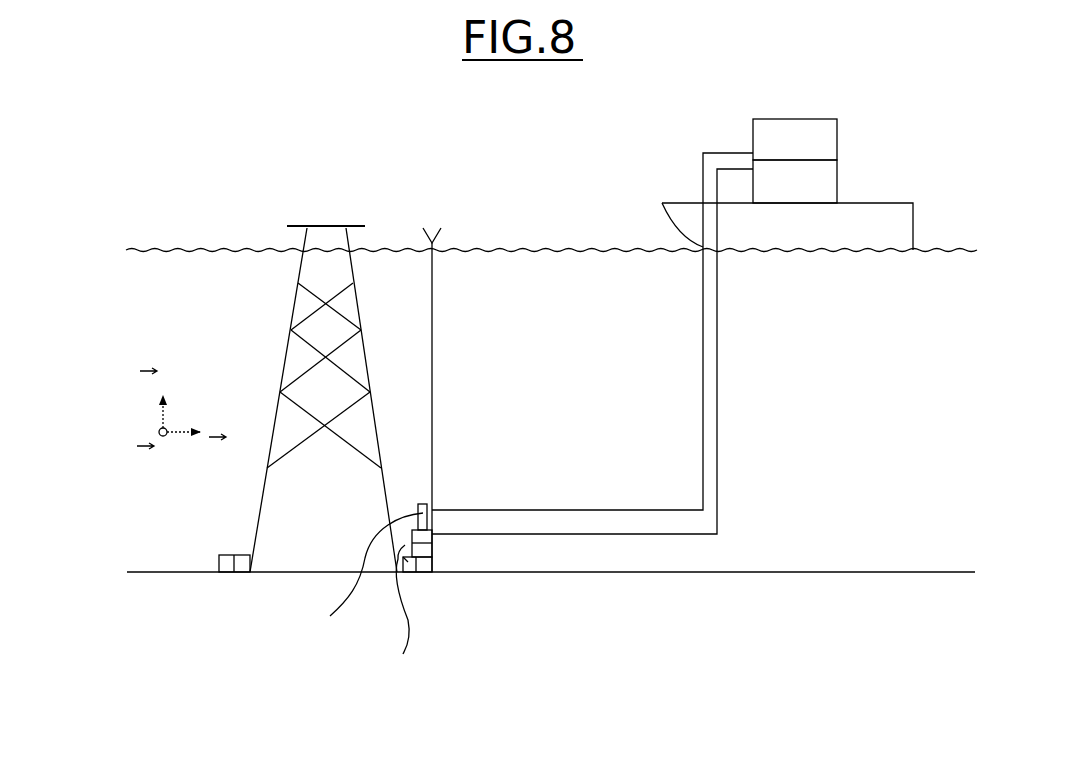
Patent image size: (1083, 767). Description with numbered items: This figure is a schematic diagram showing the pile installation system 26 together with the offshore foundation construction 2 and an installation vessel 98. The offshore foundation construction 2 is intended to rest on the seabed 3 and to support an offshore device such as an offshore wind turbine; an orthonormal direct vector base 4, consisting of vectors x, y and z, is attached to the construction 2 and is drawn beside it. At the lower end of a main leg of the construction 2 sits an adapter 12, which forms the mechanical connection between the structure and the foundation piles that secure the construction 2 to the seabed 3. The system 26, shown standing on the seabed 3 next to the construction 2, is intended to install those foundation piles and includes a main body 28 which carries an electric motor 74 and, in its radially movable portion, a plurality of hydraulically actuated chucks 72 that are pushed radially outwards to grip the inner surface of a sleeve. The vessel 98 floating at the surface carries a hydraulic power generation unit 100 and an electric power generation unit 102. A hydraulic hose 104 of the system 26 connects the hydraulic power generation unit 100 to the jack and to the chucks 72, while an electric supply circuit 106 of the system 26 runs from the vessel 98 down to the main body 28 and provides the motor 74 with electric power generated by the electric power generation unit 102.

The offshore foundation construction 2 is at (280, 360).
The seabed 3 is at (663, 613).
The orthonormal direct vector base 4 is at (118, 466).
The adapter 12 is at (215, 551).
The system 26 is at (436, 545).
The main body 28 is at (404, 558).
The radially movable chucks 72 is at (353, 578).
The electric motor 74 is at (392, 611).
The installation vessel 98 is at (916, 226).
The hydraulic power generation unit 100 is at (838, 140).
The electric power generation unit 102 is at (838, 182).
The hydraulic hose 104 is at (702, 172).
The electric supply circuit 106 is at (717, 392).